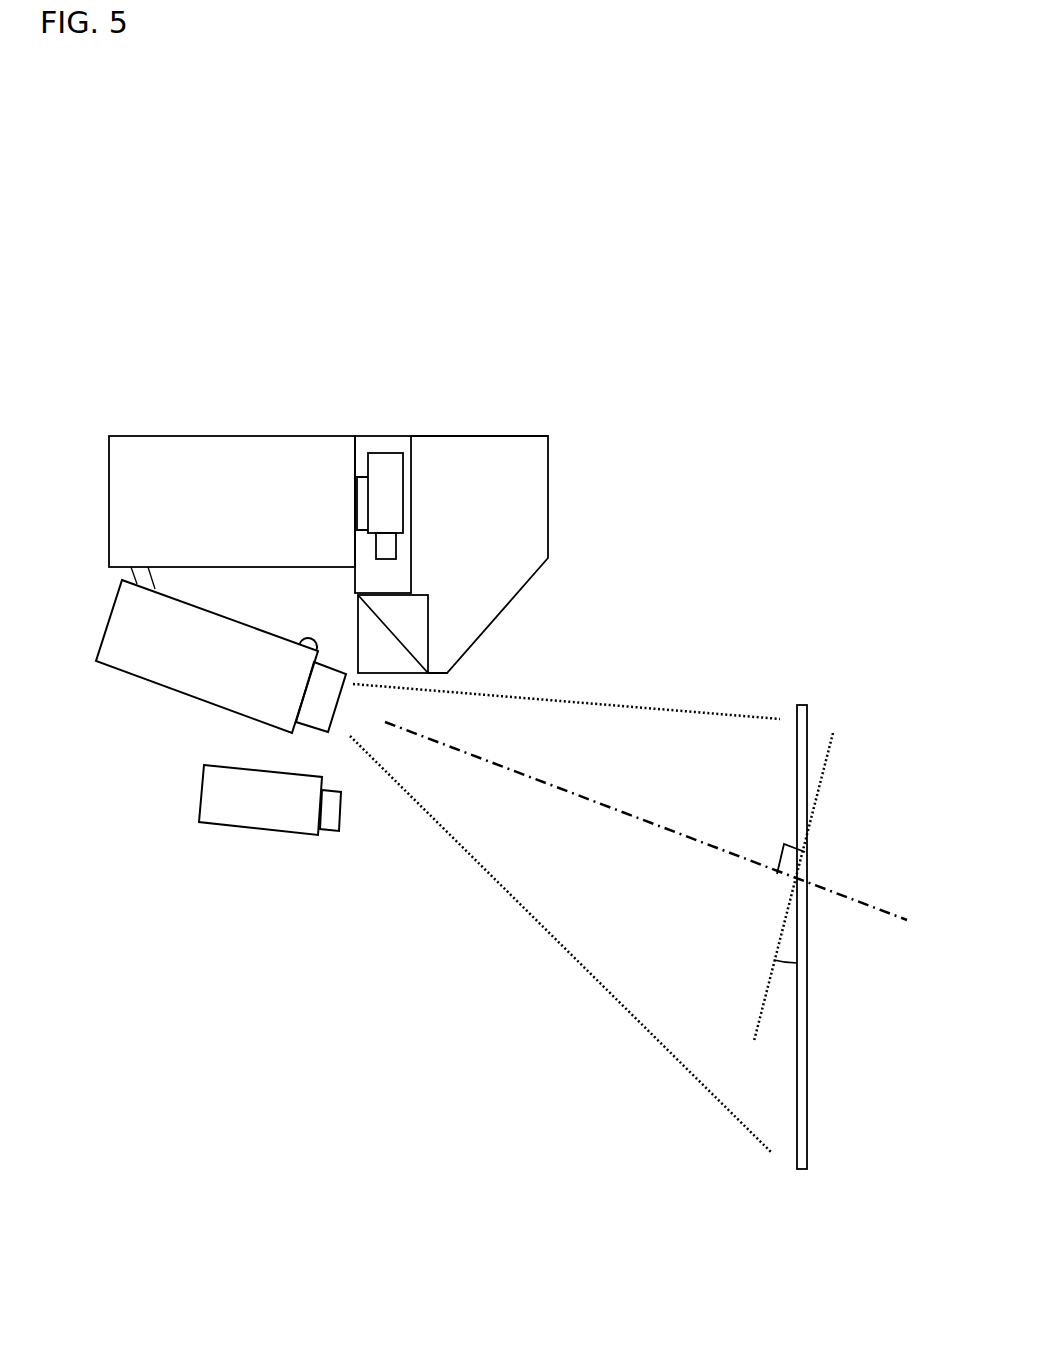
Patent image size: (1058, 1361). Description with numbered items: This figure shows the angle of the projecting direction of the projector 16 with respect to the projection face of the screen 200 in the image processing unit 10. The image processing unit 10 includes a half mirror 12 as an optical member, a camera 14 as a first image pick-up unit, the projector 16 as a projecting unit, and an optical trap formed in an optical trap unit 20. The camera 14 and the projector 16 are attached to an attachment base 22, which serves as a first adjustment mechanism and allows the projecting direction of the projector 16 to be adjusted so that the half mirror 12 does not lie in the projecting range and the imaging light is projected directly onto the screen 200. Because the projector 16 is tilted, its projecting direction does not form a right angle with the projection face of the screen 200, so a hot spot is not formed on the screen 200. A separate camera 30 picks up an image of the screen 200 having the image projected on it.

The image processing unit 10 is at (391, 517).
The half mirror 12 is at (400, 642).
The camera 14 is at (384, 472).
The projector 16 is at (127, 660).
The optical trap unit 20 is at (565, 388).
The attachment base 22 is at (210, 452).
The camera 30 is at (255, 813).
The screen 200 is at (797, 705).